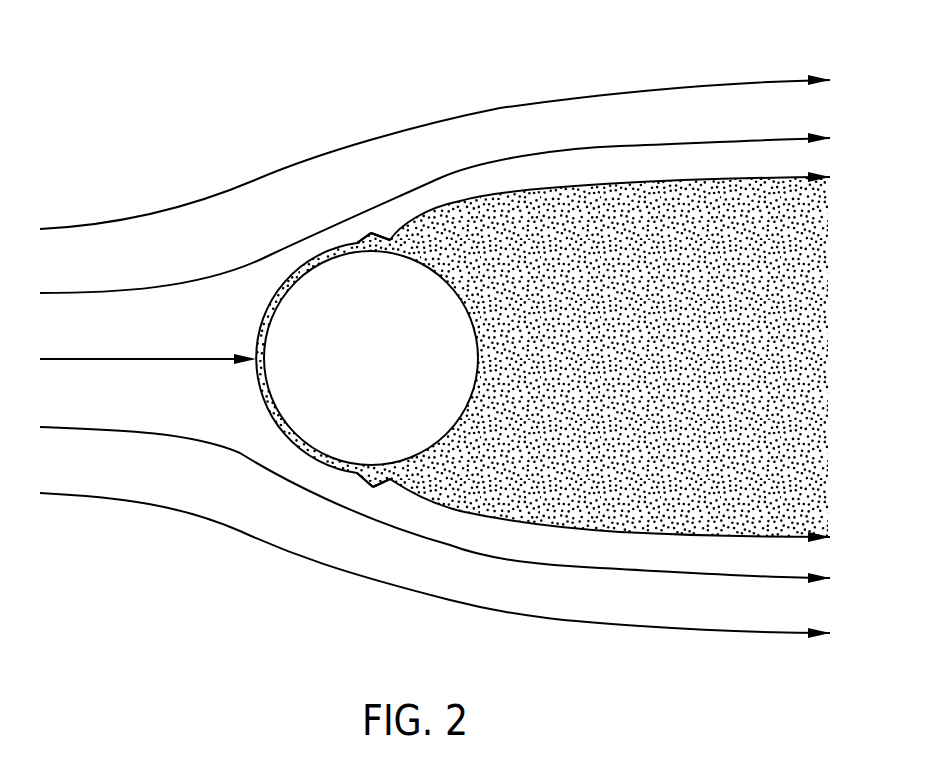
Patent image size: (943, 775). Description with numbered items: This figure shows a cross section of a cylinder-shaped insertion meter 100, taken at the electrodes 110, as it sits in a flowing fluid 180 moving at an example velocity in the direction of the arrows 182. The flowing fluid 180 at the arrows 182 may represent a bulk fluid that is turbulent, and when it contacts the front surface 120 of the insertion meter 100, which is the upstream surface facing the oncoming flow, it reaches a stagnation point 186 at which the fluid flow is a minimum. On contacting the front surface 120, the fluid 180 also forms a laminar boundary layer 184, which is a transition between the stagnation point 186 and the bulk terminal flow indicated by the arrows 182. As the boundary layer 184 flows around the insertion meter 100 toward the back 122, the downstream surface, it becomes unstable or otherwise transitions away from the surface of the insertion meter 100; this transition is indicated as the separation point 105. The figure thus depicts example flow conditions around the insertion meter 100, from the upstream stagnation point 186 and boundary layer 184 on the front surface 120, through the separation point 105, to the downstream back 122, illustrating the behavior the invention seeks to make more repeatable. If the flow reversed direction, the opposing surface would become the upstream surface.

The insertion meter 100 is at (453, 300).
The separation point 105 is at (388, 218).
The electrodes 110 is at (371, 233).
The front surface 120 is at (262, 352).
The back 122 is at (479, 357).
The flowing fluid 180 is at (110, 275).
The arrows 182 is at (623, 146).
The laminar boundary layer 184 is at (245, 298).
The stagnation point 186 is at (236, 368).